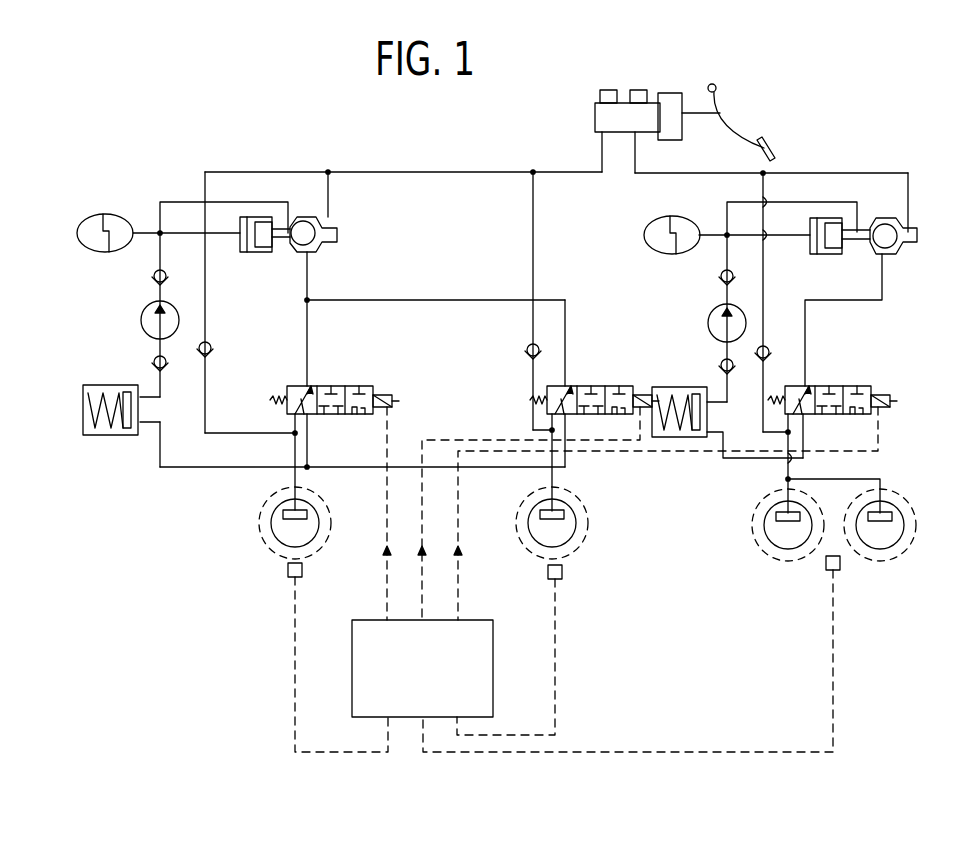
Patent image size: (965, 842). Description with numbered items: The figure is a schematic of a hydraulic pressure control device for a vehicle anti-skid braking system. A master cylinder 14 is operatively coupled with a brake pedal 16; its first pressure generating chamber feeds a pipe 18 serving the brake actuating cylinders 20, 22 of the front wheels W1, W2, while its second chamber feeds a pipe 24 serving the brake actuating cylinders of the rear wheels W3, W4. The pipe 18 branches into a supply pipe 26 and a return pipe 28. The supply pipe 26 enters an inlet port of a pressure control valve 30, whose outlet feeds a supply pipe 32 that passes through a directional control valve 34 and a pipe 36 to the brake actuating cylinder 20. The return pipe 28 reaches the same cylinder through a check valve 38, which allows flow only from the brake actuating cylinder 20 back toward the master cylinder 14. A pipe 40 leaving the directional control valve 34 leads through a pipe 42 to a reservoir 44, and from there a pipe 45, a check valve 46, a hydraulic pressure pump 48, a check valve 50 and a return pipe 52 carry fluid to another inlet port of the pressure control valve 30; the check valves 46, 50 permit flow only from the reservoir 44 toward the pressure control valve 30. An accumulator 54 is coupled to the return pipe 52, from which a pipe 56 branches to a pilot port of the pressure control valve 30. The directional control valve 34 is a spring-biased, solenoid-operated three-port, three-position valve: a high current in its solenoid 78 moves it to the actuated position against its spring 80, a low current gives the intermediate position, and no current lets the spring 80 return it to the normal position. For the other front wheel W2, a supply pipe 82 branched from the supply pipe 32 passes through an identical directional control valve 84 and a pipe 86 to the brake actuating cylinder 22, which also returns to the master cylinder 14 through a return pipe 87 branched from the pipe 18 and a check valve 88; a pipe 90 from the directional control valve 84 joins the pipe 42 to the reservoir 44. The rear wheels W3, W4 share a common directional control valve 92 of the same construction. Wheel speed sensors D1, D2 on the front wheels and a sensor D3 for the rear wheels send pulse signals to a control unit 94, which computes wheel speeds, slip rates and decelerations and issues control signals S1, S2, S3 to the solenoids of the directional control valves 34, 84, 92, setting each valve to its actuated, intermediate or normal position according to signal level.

The master cylinder 14 is at (628, 84).
The brake pedal 16 is at (772, 145).
The pipe 18 is at (500, 171).
The brake actuating cylinder 20 is at (308, 515).
The brake actuating cylinder 22 is at (562, 514).
The pipe 24 is at (685, 173).
The supply pipe 26 is at (330, 200).
The return pipe 28 is at (232, 171).
The pressure control valve 30 is at (303, 210).
The supply pipe 32 is at (308, 275).
The directional control valve 34 is at (338, 380).
The pipe 36 is at (292, 478).
The check valve 38 is at (207, 342).
The pipe 40 is at (312, 440).
The pipe 42 is at (165, 468).
The reservoir 44 is at (108, 436).
The pipe 45 is at (150, 398).
The check valve 46 is at (152, 362).
The hydraulic pressure pump 48 is at (141, 320).
The check valve 50 is at (152, 278).
The return pipe 52 is at (184, 200).
The accumulator 54 is at (85, 217).
The pipe 56 is at (160, 230).
The solenoid 78 is at (400, 401).
The spring 80 is at (270, 400).
The supply pipe 82 is at (418, 299).
The directional control valve 84 is at (598, 380).
The pipe 86 is at (551, 477).
The return pipe 87 is at (536, 280).
The check valve 88 is at (525, 349).
The pipe 90 is at (474, 468).
The directional control valve 92 is at (832, 380).
The control unit 94 is at (352, 680).
The front wheel W1 is at (258, 540).
The front wheel W2 is at (584, 538).
The rear wheel W3 is at (756, 538).
The rear wheel W4 is at (910, 540).
The wheel speed sensor D1 is at (283, 572).
The wheel speed sensor D2 is at (548, 572).
The wheel speed sensor D3 is at (826, 568).
The control signal S1 is at (386, 560).
The control signal S2 is at (420, 578).
The control signal S3 is at (458, 600).